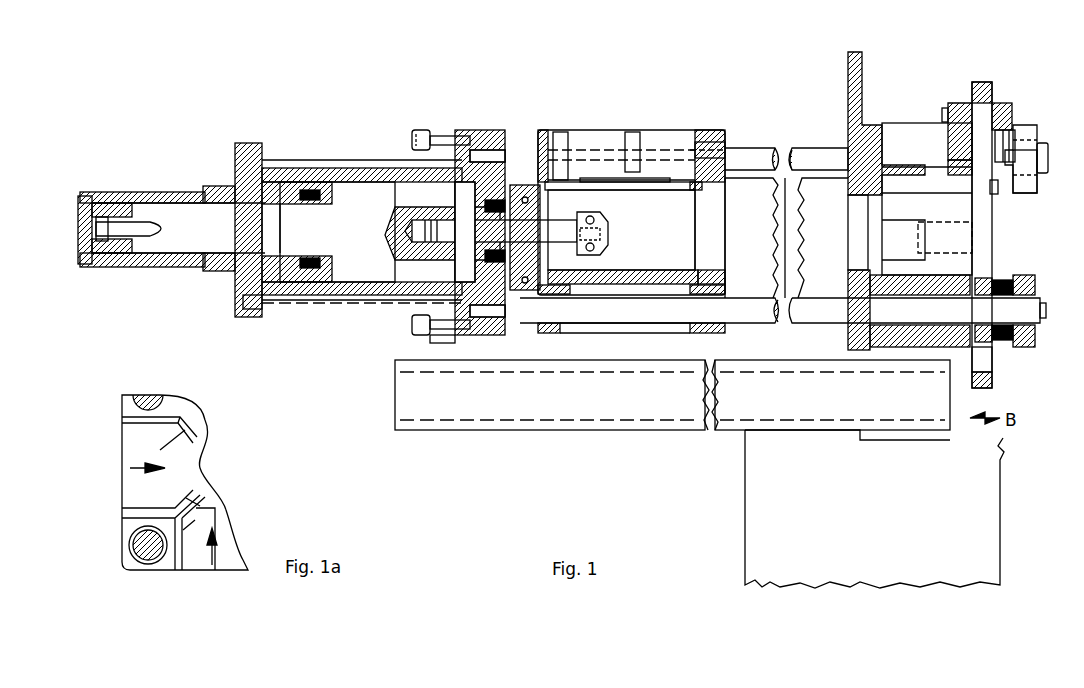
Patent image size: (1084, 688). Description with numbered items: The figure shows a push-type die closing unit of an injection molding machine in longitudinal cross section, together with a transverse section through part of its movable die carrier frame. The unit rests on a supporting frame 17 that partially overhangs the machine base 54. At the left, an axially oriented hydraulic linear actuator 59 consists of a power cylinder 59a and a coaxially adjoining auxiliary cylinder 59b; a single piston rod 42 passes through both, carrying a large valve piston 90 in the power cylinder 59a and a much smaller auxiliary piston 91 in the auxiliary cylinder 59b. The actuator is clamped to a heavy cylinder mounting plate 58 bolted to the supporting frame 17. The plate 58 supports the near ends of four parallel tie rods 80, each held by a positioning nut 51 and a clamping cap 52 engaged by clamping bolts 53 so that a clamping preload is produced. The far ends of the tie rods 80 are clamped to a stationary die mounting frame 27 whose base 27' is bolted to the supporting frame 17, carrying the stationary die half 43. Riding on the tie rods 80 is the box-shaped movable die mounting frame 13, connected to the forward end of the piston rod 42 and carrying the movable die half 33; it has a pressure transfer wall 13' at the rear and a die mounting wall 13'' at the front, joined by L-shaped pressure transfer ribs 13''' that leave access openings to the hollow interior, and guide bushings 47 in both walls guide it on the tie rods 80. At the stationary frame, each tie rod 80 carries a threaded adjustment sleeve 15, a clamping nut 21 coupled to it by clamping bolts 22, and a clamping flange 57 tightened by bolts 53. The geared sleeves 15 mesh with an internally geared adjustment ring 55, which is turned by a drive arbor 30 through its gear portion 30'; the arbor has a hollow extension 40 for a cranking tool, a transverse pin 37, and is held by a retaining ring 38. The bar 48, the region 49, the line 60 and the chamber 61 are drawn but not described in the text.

In FIG. 1, the movable die mounting frame 13 is at (631, 183).
In FIG. 1A, the movable die mounting frame 13 is at (198, 482).
In FIG. 1, the pressure transfer wall 13' is at (581, 237).
In FIG. 1, the die mounting wall 13'' is at (733, 272).
In FIG. 1, the pressure transfer ribs 13''' is at (625, 234).
In FIG. 1A, the pressure transfer ribs 13''' is at (236, 515).
In FIG. 1, the threaded adjustment sleeve 15 is at (985, 345).
In FIG. 1, the supporting frame 17 is at (532, 400).
In FIG. 1, the clamping nut 21 is at (1005, 188).
In FIG. 1, the clamping bolts 22 is at (1000, 342).
In FIG. 1, the stationary die mounting frame 27 is at (886, 185).
In FIG. 1, the base 27' is at (920, 335).
In FIG. 1, the drive arbor 30 is at (927, 165).
In FIG. 1, the gear portion 30' is at (956, 97).
In FIG. 1, the movable die half 33 is at (748, 190).
In FIG. 1, the transverse pin 37 is at (1020, 125).
In FIG. 1, the retaining ring 38 is at (950, 103).
In FIG. 1, the hollow extension 40 is at (1003, 103).
In FIG. 1, the piston rod 42 is at (393, 210).
In FIG. 1, the stationary die half 43 is at (826, 195).
In FIG. 1, the guide bushings 47 is at (697, 333).
In FIG. 1, the guide bar 48 is at (668, 188).
In FIG. 1, the guide channel 49 is at (682, 157).
In FIG. 1, the positioning nut 51 is at (442, 136).
In FIG. 1, the clamping cap 52 is at (412, 322).
In FIG. 1, the clamping bolts 53 is at (440, 343).
In FIG. 1, the machine base 54 is at (760, 513).
In FIG. 1, the adjustment ring 55 is at (982, 82).
In FIG. 1, the clamping flange 57 is at (1012, 125).
In FIG. 1, the cylinder mounting plate 58 is at (483, 130).
In FIG. 1, the hydraulic linear actuator 59 is at (280, 300).
In FIG. 1, the power cylinder 59a is at (330, 182).
In FIG. 1, the auxiliary cylinder 59b is at (137, 190).
In FIG. 1, the break line region 60 is at (787, 200).
In FIG. 1, the chamber 61 is at (665, 233).
In FIG. 1, the tie rods 80 is at (762, 323).
In FIG. 1A, the tie rods 80 is at (147, 395).
In FIG. 1, the valve piston 90 is at (362, 225).
In FIG. 1, the auxiliary piston 91 is at (128, 255).